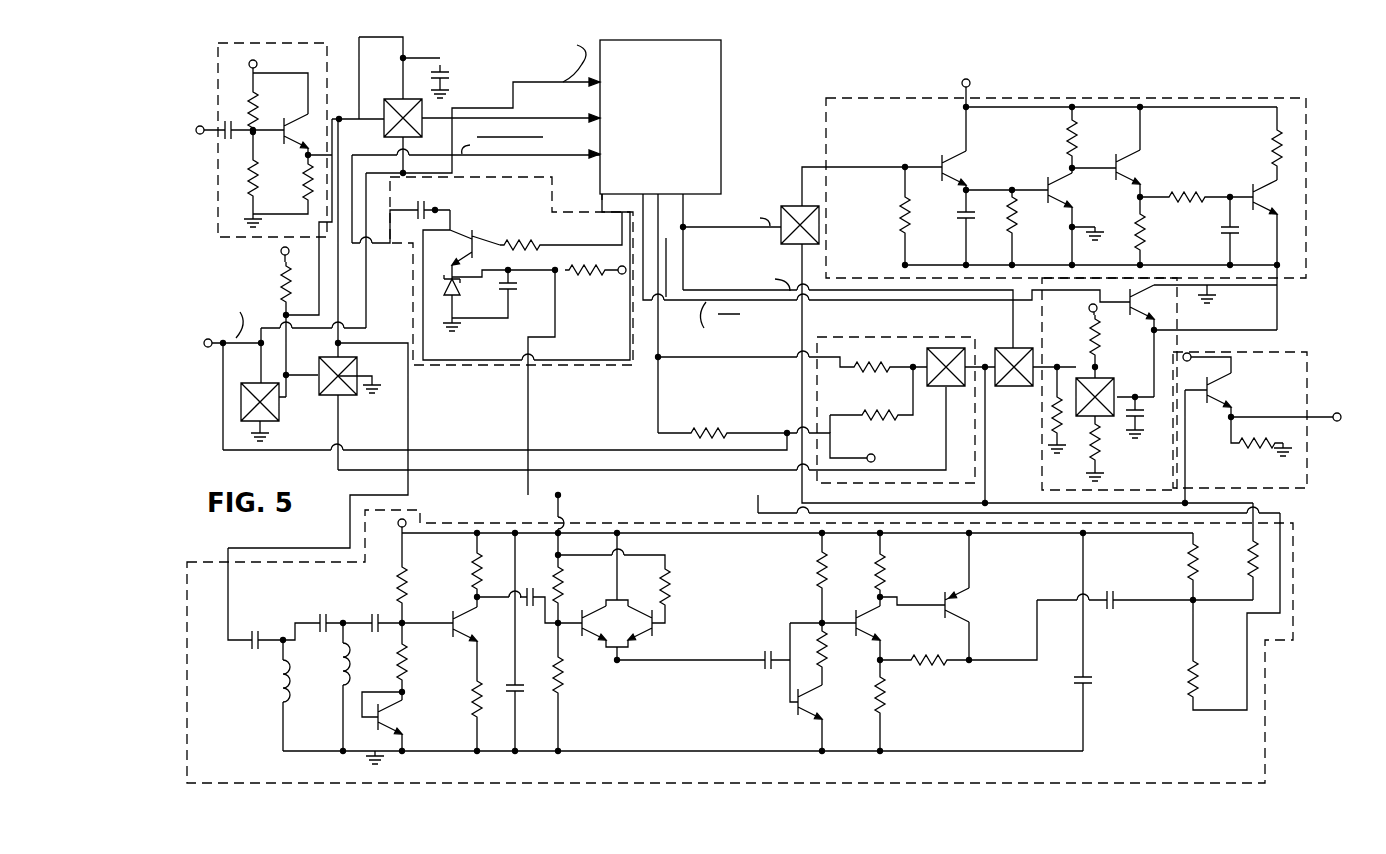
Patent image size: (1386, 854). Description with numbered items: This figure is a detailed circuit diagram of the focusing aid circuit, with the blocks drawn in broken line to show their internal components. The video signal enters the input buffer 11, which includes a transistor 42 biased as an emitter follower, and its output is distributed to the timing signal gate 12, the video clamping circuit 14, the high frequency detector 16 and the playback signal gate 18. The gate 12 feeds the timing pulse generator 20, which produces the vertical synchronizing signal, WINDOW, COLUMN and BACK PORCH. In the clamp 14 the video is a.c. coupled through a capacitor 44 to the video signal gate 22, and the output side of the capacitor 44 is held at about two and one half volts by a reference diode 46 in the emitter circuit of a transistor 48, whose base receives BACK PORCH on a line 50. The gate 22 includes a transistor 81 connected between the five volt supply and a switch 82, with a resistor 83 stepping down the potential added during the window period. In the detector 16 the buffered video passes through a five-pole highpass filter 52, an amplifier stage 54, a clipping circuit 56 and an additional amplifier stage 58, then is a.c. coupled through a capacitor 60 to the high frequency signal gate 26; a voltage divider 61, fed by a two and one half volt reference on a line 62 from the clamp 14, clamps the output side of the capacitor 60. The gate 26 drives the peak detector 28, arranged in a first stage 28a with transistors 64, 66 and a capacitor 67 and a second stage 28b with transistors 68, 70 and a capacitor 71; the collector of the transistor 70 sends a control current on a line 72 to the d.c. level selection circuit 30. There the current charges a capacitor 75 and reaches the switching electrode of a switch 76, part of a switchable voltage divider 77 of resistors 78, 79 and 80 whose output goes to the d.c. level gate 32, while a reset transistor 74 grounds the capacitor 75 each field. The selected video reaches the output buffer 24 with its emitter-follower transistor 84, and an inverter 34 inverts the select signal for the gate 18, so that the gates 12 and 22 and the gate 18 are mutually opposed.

The input buffer 11 is at (327, 48).
The timing signal gate 12 is at (420, 130).
The video clamping circuit 14 is at (553, 202).
The high frequency detector 16 is at (428, 522).
The playback signal gate 18 is at (357, 359).
The timing pulse generator 20 is at (722, 92).
The video signal gate 22 is at (860, 336).
The output buffer 24 is at (1285, 488).
The high frequency signal gate 26 is at (790, 206).
The peak detector 28 is at (828, 127).
The first stage of peak detector 28a is at (998, 160).
The second stage of peak detector 28b is at (1194, 178).
The d.c. level selection circuit 30 is at (1042, 434).
The d.c. level gate 32 is at (1000, 347).
The inverter 34 is at (279, 417).
The transistor 42 is at (303, 146).
The capacitor 44 is at (428, 210).
The reference diode 46 is at (456, 299).
The transistor 48 is at (478, 232).
The line 50 is at (600, 190).
The five-pole highpass filter 52 is at (290, 604).
The amplifier stage 54 is at (454, 653).
The clipping circuit 56 is at (683, 629).
The amplifier stage 58 is at (907, 589).
The capacitor 60 is at (1113, 609).
The voltage divider 61 is at (1175, 637).
The line 62 is at (1247, 628).
The transistor 64 is at (940, 160).
The transistor 66 is at (1046, 183).
The capacitor 67 is at (972, 222).
The transistor 68 is at (1134, 180).
The transistor 70 is at (1250, 186).
The capacitor 71 is at (1222, 228).
The line 72 is at (1277, 305).
The reset transistor 74 is at (1125, 312).
The capacitor 75 is at (1144, 420).
The switch 76 is at (1117, 384).
The switchable voltage divider 77 is at (1066, 358).
The resistor 78 is at (1102, 455).
The resistor 79 is at (1058, 432).
The resistor 80 is at (1098, 345).
The transistor 81 is at (836, 426).
The switch 82 is at (928, 388).
The resistor 83 is at (893, 420).
The transistor 84 is at (1196, 400).